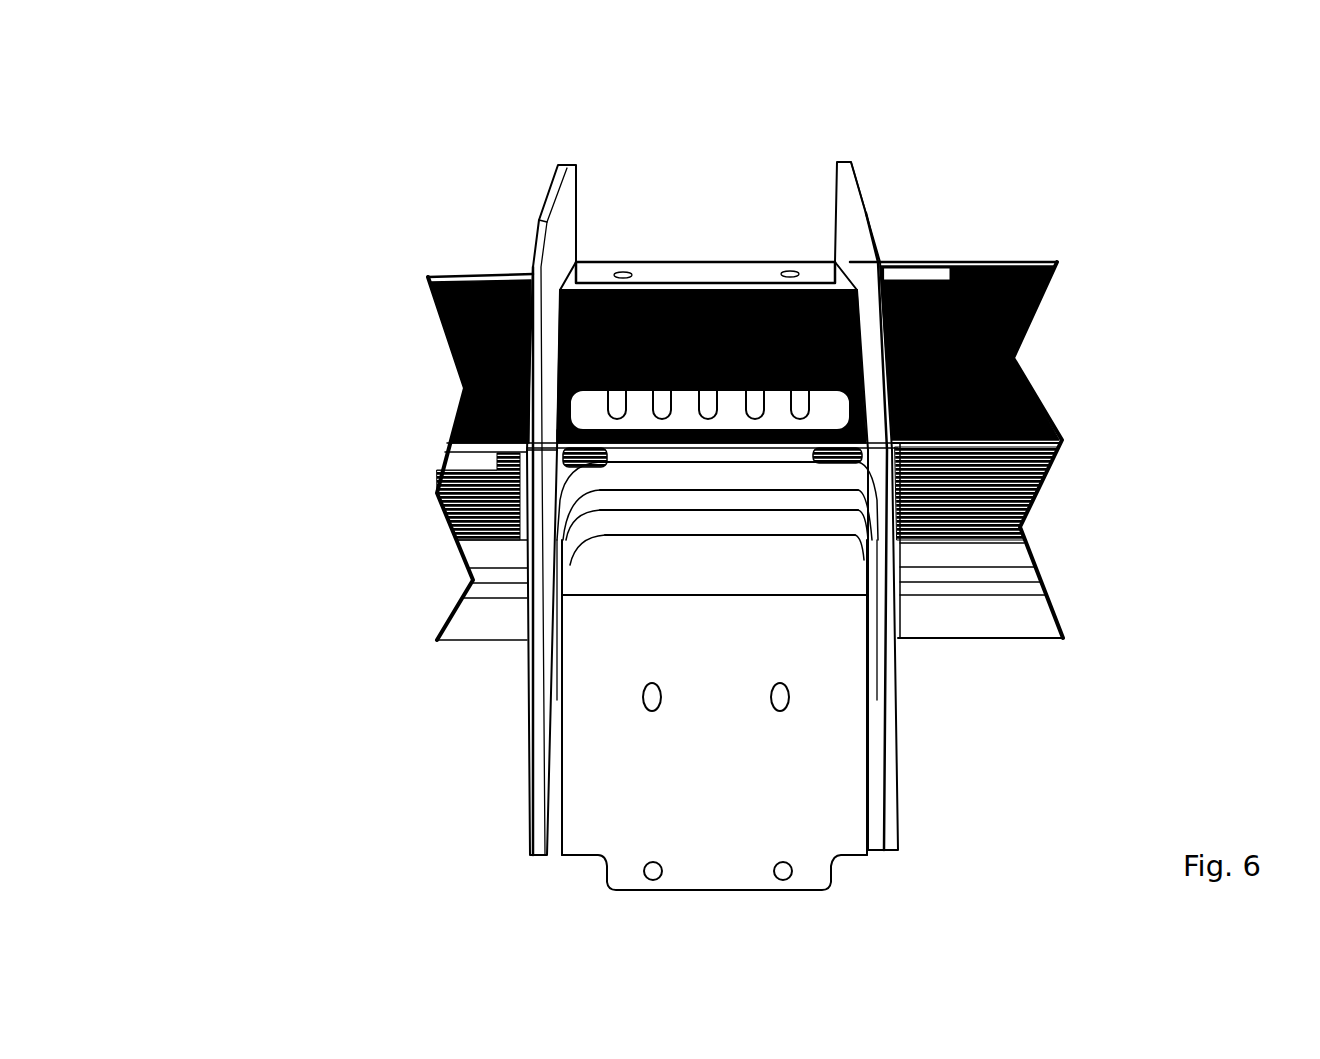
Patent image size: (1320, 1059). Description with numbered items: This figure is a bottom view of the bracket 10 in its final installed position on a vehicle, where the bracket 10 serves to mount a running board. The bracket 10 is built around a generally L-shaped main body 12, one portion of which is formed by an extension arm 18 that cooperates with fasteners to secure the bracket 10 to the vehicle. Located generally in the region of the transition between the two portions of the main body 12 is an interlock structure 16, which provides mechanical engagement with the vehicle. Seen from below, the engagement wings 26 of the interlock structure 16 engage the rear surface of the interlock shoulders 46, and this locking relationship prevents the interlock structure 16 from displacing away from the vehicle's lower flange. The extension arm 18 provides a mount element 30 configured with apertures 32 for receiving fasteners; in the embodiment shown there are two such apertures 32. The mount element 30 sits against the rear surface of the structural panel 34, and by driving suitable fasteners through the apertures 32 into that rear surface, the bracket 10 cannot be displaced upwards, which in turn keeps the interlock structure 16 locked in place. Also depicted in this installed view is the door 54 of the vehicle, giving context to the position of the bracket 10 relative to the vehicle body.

The bracket 10 is at (282, 168).
The main body 12 is at (877, 610).
The interlock structure 16 is at (737, 300).
The extension arm 18 is at (1030, 317).
The engagement wings 26 is at (583, 413).
The mount element 30 is at (715, 273).
The aperture 32 is at (620, 270).
The structural panel 34 is at (433, 308).
The interlock shoulders 46 is at (600, 462).
The door 54 is at (440, 640).